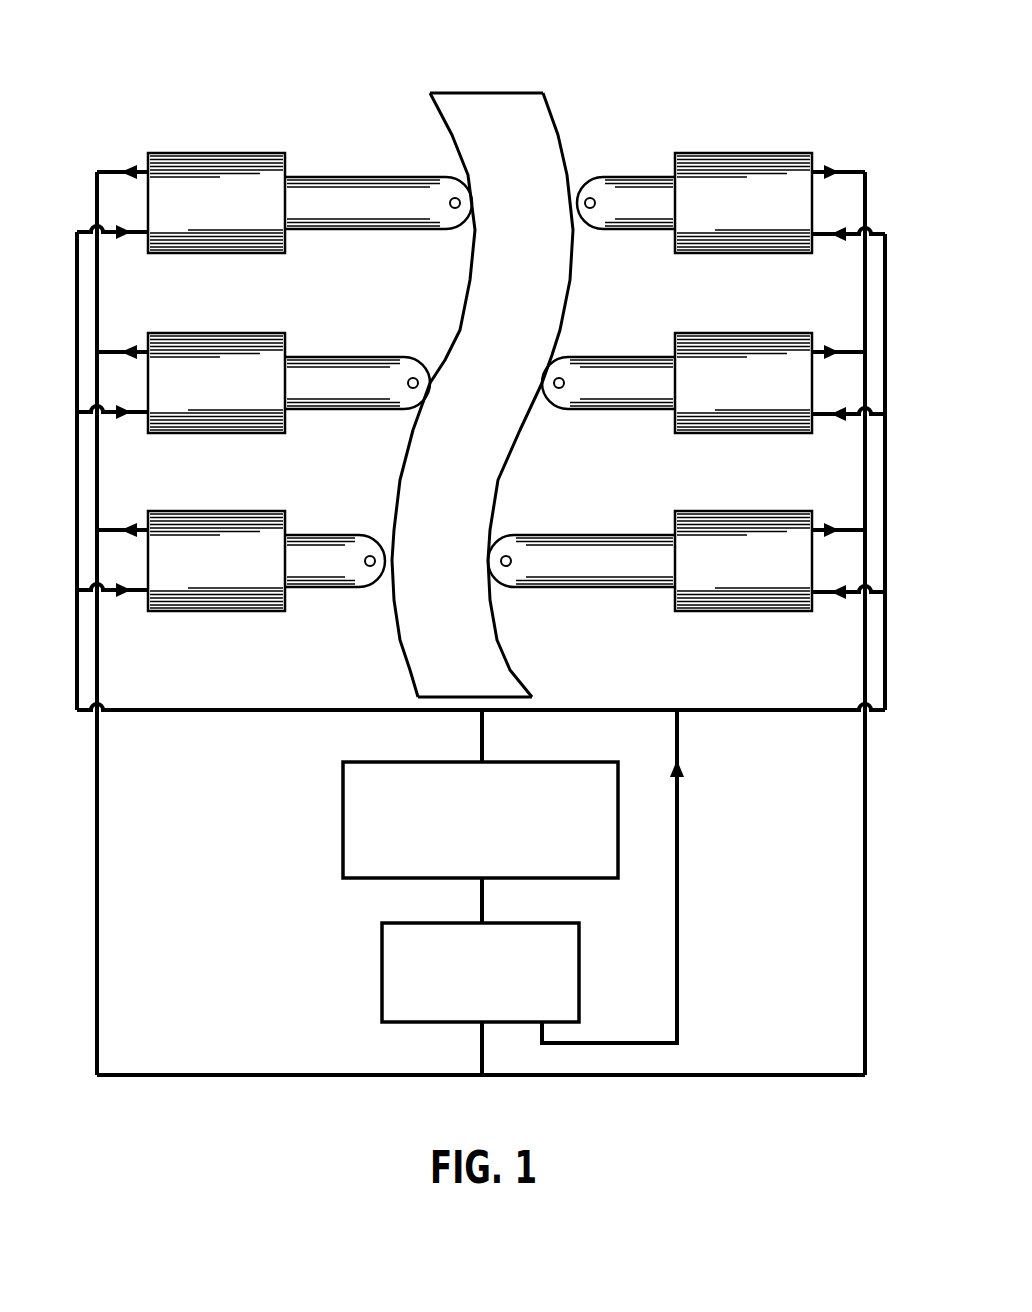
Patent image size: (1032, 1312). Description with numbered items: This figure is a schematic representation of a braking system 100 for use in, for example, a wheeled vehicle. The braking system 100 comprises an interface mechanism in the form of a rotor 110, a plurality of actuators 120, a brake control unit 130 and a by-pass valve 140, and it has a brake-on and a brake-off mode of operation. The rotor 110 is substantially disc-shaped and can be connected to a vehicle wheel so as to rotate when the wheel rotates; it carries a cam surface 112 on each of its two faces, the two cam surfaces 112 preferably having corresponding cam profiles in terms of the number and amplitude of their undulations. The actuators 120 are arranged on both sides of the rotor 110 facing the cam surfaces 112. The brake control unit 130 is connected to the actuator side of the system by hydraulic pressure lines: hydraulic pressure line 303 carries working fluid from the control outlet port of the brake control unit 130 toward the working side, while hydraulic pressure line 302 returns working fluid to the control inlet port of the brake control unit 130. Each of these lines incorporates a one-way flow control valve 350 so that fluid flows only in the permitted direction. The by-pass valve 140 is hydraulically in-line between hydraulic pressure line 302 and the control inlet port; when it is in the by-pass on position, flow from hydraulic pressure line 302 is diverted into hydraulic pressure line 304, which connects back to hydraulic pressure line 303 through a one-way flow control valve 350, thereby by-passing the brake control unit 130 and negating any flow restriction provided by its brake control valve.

The braking system 100 is at (661, 51).
The rotor 110 is at (540, 114).
The cam surface 112 is at (455, 133).
The actuators 120 is at (748, 510).
The brake control unit 130 is at (343, 800).
The by-pass valve 140 is at (382, 963).
The hydraulic pressure line 302 is at (752, 1072).
The hydraulic pressure line 303 is at (482, 735).
The hydraulic pressure line 304 is at (677, 838).
The one-way flow control valve 350 is at (682, 768).